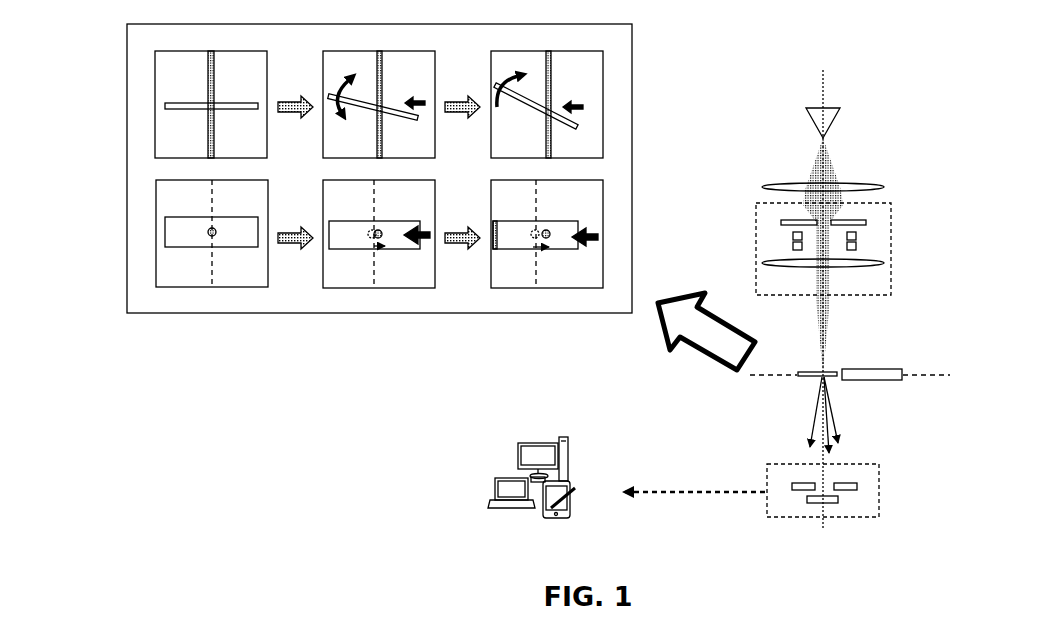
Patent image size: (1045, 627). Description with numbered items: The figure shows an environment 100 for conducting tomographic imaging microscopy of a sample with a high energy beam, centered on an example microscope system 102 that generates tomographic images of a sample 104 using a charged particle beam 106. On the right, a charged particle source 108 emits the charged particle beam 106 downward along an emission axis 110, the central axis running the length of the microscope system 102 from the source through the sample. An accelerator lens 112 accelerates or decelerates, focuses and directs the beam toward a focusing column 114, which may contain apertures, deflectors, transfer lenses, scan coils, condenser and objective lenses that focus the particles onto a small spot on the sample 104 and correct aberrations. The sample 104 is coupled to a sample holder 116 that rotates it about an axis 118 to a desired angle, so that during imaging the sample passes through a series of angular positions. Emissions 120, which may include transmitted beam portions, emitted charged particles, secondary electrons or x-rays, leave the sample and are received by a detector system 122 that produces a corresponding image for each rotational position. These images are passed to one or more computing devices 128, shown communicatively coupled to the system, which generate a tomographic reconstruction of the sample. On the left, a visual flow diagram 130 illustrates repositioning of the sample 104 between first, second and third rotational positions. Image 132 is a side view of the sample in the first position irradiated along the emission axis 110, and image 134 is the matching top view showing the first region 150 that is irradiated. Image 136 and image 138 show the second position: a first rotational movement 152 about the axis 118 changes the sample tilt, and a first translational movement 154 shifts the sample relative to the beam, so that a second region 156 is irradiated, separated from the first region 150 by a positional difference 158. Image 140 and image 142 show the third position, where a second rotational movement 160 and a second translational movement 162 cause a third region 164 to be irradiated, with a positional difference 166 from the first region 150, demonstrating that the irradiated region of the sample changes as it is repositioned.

The environment 100 is at (70, 34).
The microscope system 102 is at (893, 35).
The sample 104 is at (197, 112).
The charged particle beam 106 is at (208, 72).
The charged particle source 108 is at (810, 121).
The emission axis 110 is at (215, 138).
The accelerator lens 112 is at (860, 184).
The focusing column 114 is at (757, 218).
The sample holder 116 is at (883, 381).
The axis 118 is at (372, 108).
The emissions 120 is at (812, 427).
The detector system 122 is at (885, 477).
The computing devices 128 is at (537, 494).
The visual flow diagram 130 is at (601, 21).
The image 132 is at (243, 47).
The image 134 is at (256, 177).
The image 136 is at (413, 47).
The image 138 is at (421, 177).
The image 140 is at (579, 47).
The image 142 is at (590, 177).
The first region 150 is at (215, 235).
The first rotational movement 152 is at (335, 84).
The first translational movement 154 is at (411, 98).
The second region 156 is at (382, 232).
The positional difference 158 is at (383, 248).
The second rotational movement 160 is at (500, 82).
The second translational movement 162 is at (574, 102).
The third region 164 is at (548, 232).
The positional difference 166 is at (533, 250).